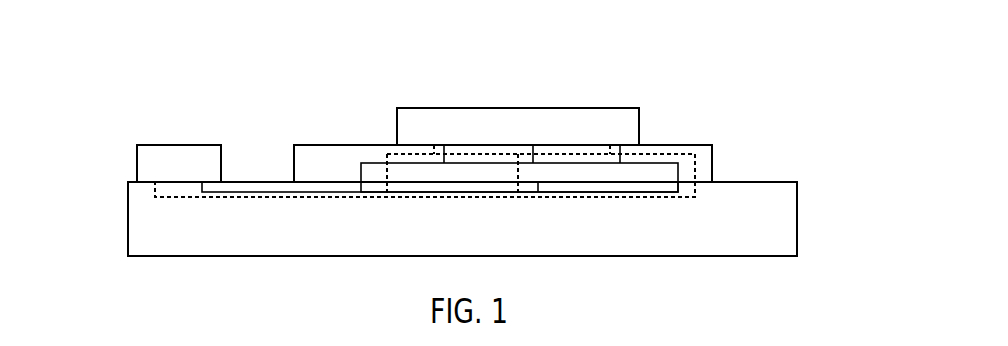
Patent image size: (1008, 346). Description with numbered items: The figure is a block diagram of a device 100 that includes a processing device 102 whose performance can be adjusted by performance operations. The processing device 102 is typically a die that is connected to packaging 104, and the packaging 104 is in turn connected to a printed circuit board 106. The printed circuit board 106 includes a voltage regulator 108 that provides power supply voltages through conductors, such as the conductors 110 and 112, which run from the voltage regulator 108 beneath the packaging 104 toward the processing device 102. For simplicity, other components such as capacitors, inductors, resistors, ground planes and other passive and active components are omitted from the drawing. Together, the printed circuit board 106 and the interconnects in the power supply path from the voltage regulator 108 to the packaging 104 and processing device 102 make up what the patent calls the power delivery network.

The device 100 is at (116, 64).
The processing device 102 is at (640, 128).
The packaging 104 is at (363, 145).
The printed circuit board 106 is at (797, 218).
The voltage regulator 108 is at (137, 165).
The conductor 110 is at (698, 162).
The conductor 112 is at (680, 172).